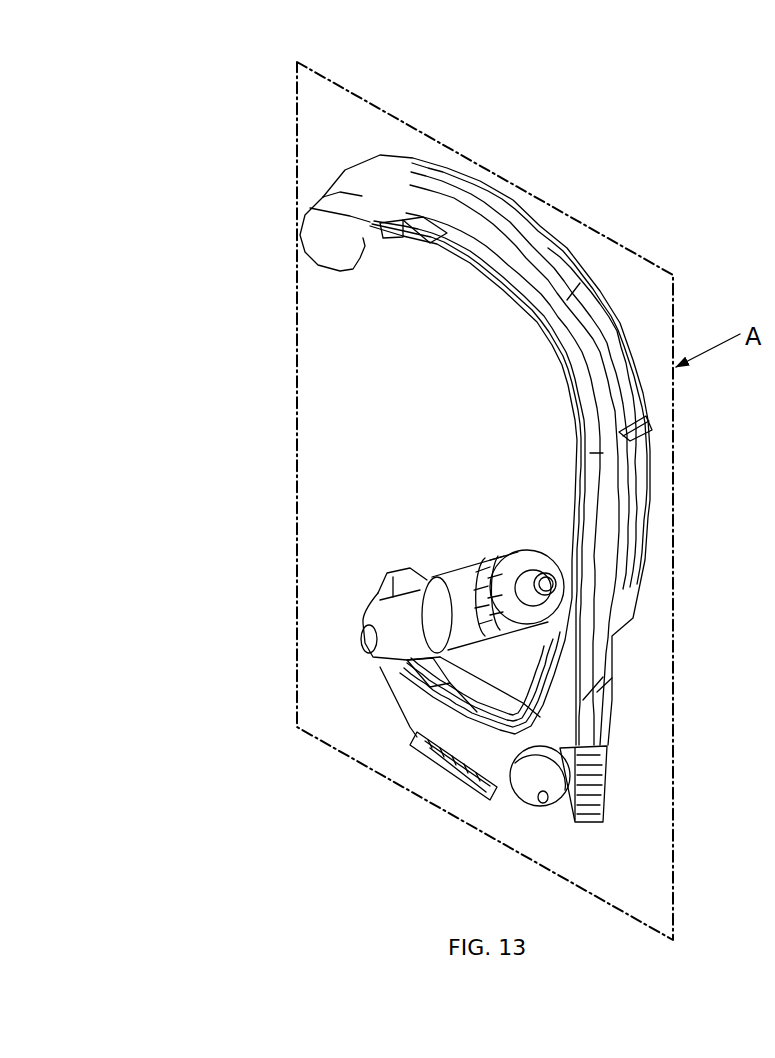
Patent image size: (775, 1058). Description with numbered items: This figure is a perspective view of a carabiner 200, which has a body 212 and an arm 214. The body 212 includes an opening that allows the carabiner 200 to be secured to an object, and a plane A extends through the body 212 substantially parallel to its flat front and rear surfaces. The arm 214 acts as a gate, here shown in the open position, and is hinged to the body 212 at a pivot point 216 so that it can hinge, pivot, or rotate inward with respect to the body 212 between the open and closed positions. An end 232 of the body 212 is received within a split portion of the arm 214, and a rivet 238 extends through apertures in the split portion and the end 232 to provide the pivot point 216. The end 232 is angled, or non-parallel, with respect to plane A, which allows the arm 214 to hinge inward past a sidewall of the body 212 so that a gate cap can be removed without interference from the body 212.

The carabiner 200 is at (297, 118).
The body 212 is at (566, 246).
The arm 214 is at (460, 548).
The end 232 is at (380, 567).
The pivot point 216 is at (353, 635).
The rivet 238 is at (368, 646).